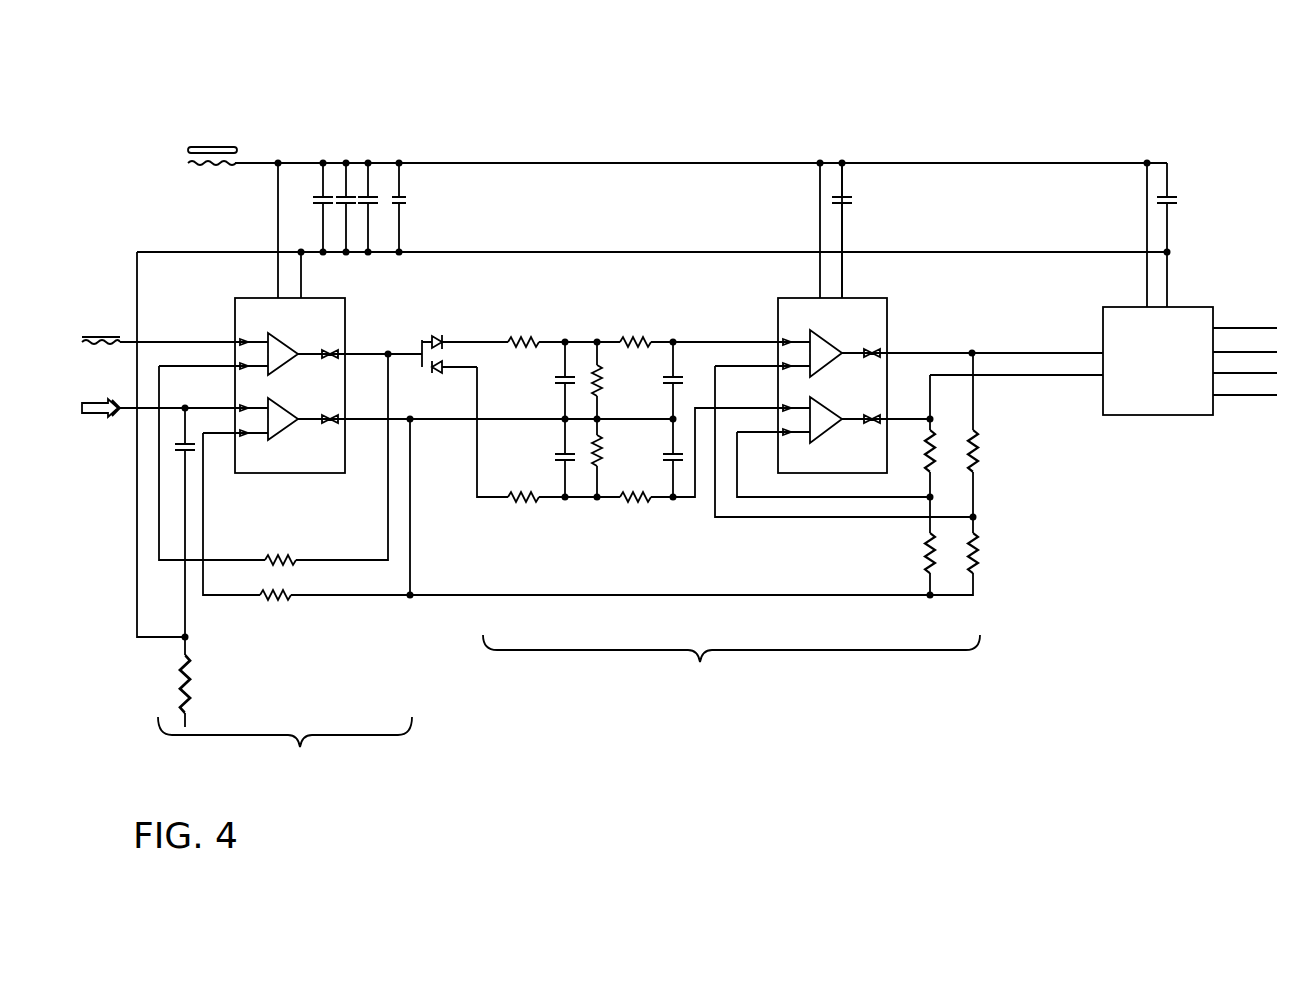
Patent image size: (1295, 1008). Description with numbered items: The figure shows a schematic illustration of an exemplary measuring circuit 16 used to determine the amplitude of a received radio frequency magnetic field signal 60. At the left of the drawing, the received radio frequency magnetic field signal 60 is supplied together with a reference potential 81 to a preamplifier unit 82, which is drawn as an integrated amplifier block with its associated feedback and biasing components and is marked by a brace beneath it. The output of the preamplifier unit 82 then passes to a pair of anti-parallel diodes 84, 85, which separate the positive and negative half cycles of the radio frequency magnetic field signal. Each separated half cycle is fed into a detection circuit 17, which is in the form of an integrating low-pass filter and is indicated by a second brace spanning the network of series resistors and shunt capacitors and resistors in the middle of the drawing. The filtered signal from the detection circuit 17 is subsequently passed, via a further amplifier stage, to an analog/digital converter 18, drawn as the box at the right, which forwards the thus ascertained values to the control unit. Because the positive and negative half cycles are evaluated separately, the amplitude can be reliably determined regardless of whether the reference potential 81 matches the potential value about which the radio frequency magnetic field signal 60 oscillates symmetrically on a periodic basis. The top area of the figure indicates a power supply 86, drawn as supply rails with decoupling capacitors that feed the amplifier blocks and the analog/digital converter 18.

The radio frequency magnetic field signal 60 is at (97, 332).
The reference potential 81 is at (91, 416).
The preamplifier unit 82 is at (525, 541).
The diode 84 is at (440, 336).
The diode 85 is at (437, 373).
The detection circuit 17 is at (728, 519).
The measuring circuit 16 is at (1080, 618).
The A/D converter 18 is at (1113, 418).
The power supply 86 is at (1167, 140).